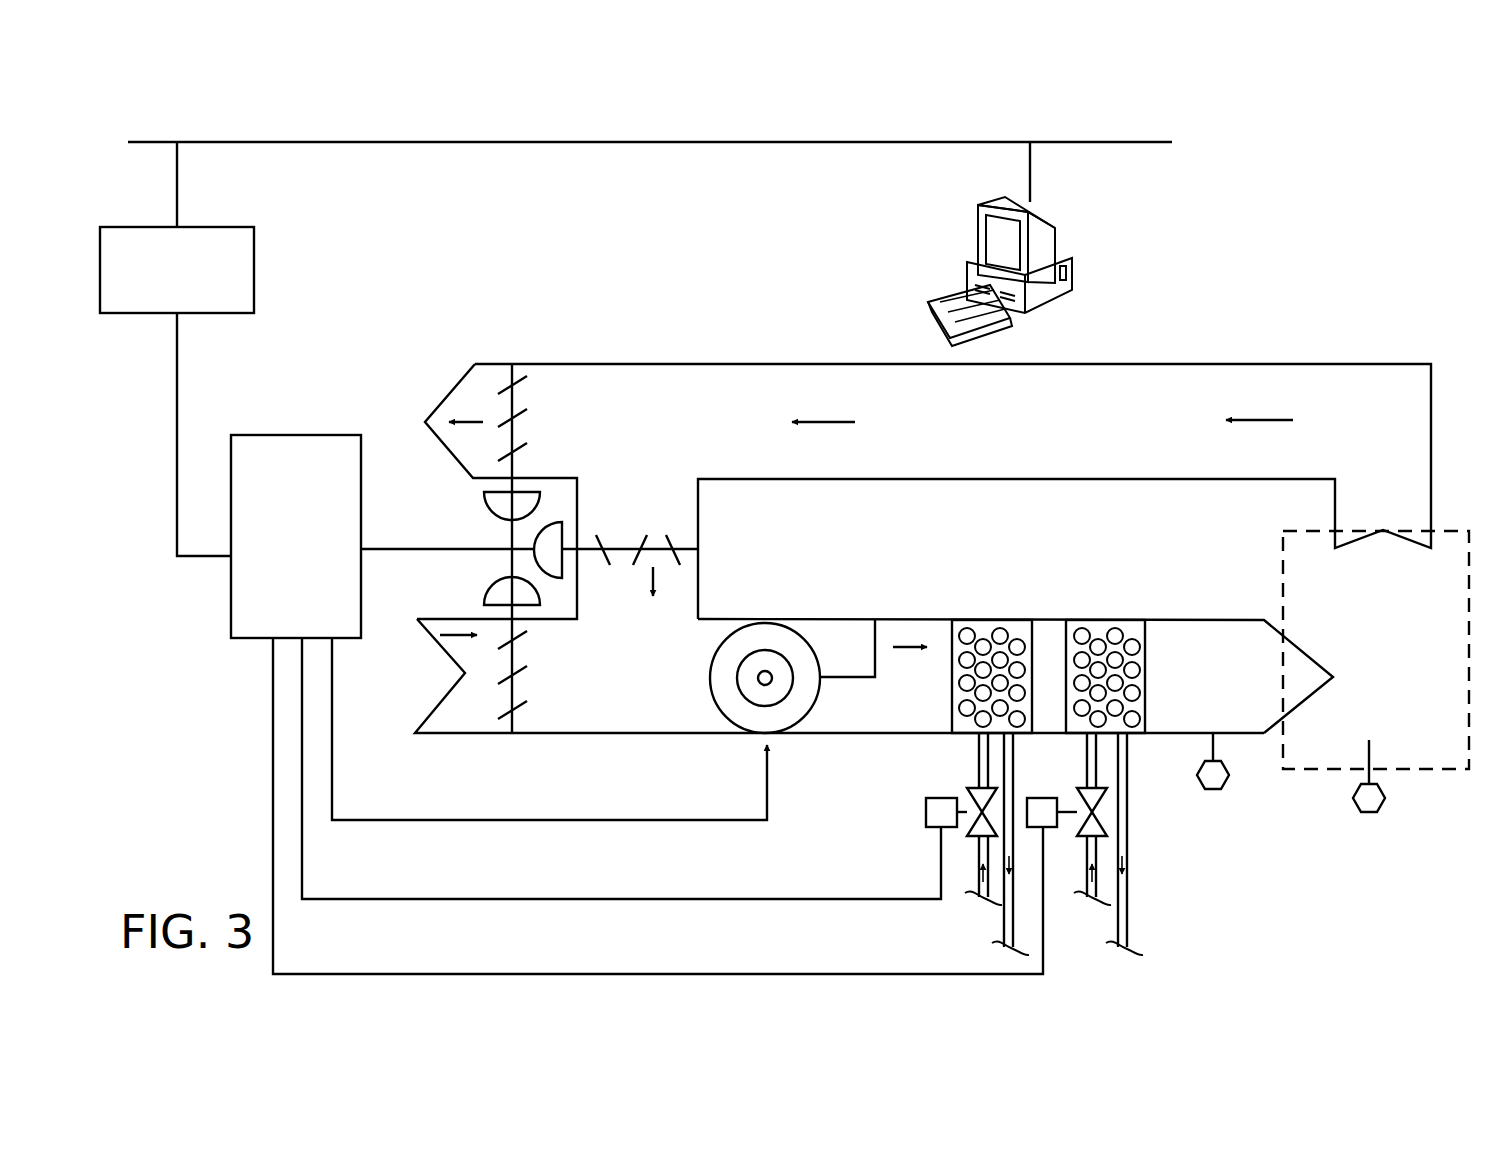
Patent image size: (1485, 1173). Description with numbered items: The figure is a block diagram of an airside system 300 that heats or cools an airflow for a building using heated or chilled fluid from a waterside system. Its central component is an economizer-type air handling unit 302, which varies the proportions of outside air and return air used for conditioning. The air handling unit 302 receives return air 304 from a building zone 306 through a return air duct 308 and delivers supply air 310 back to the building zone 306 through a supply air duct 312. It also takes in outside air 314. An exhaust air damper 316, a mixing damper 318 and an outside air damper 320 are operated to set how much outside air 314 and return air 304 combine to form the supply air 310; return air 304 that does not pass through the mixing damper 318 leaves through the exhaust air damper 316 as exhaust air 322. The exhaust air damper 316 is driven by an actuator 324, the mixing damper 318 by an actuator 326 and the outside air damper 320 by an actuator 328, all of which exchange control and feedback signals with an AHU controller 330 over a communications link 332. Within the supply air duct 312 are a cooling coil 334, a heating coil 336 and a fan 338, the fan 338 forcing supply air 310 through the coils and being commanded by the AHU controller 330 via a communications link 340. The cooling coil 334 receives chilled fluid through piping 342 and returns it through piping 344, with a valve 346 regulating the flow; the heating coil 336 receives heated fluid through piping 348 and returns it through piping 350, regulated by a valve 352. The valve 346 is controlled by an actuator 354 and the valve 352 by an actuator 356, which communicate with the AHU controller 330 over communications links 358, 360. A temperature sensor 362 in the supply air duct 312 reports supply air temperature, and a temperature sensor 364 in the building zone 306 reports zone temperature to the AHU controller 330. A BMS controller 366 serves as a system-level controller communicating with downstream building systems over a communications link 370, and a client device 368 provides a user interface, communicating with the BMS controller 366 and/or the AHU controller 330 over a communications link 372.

The airside system 300 is at (556, 104).
The air handling unit 302 is at (1270, 242).
The return air 304 is at (1393, 442).
The building zone 306 is at (1443, 752).
The return air duct 308 is at (1285, 364).
The supply air 310 is at (1238, 640).
The supply air duct 312 is at (1180, 620).
The outside air 314 is at (400, 713).
The exhaust air damper 316 is at (515, 405).
The mixing damper 318 is at (683, 548).
The outside air damper 320 is at (515, 690).
The exhaust air 322 is at (400, 378).
The actuator 324 is at (535, 500).
The actuator 326 is at (560, 530).
The actuator 328 is at (490, 600).
The AHU controller 330 is at (268, 443).
The communications link 332 is at (415, 548).
The cooling coil 334 is at (985, 625).
The heating coil 336 is at (1100, 625).
The fan 338 is at (818, 695).
The communications link 340 is at (570, 815).
The piping 342 is at (978, 758).
The piping 344 is at (1003, 928).
The valve 346 is at (968, 790).
The piping 348 is at (1088, 758).
The piping 350 is at (1128, 912).
The valve 352 is at (1080, 790).
The actuator 354 is at (930, 825).
The actuator 356 is at (1050, 828).
The communications link 358 is at (665, 897).
The communications link 360 is at (720, 972).
The temperature sensor 362 is at (1213, 790).
The temperature sensor 364 is at (1367, 815).
The BMS controller 366 is at (247, 270).
The client device 368 is at (1048, 235).
The communications link 370 is at (177, 480).
The communications link 372 is at (295, 142).